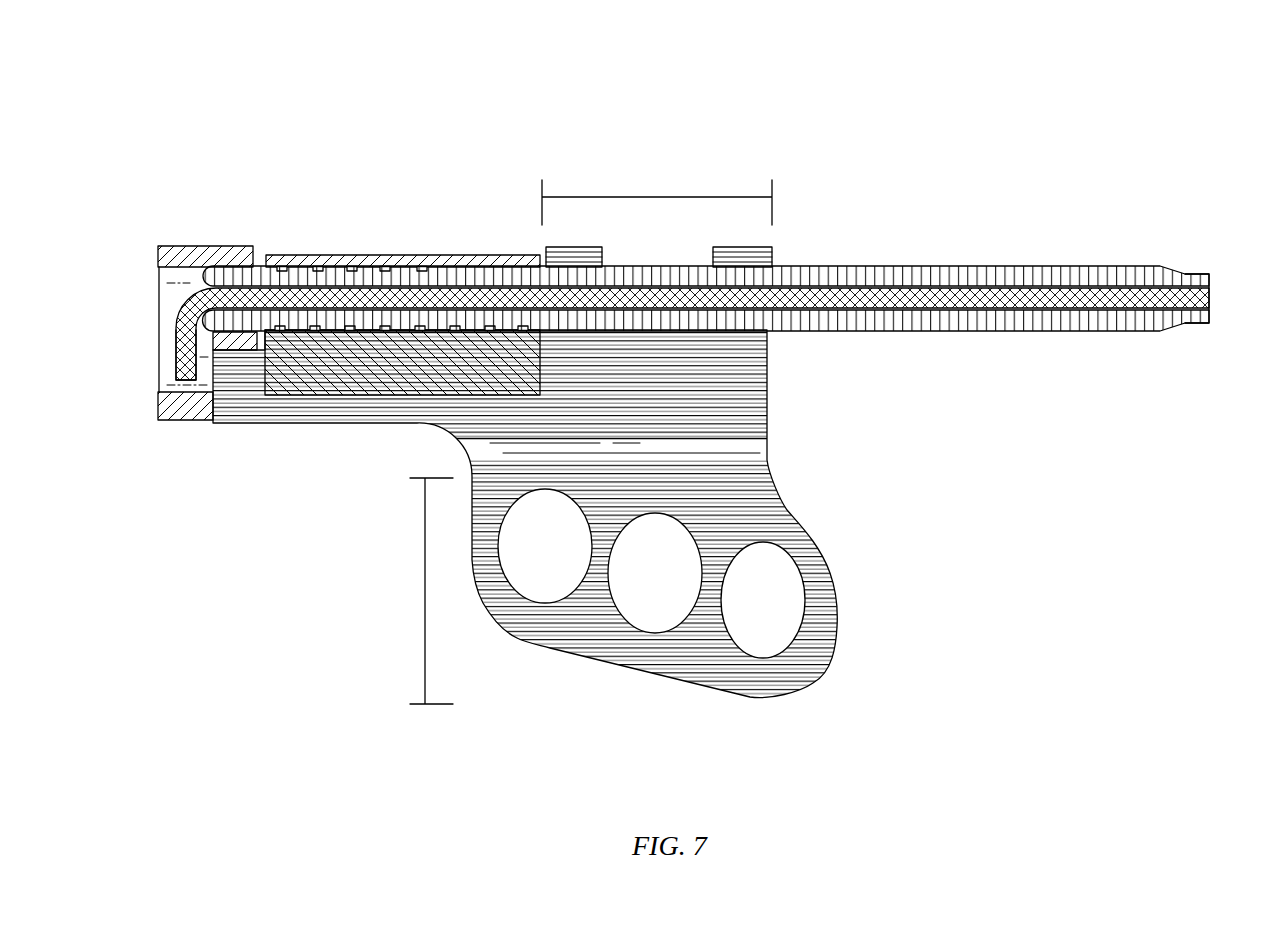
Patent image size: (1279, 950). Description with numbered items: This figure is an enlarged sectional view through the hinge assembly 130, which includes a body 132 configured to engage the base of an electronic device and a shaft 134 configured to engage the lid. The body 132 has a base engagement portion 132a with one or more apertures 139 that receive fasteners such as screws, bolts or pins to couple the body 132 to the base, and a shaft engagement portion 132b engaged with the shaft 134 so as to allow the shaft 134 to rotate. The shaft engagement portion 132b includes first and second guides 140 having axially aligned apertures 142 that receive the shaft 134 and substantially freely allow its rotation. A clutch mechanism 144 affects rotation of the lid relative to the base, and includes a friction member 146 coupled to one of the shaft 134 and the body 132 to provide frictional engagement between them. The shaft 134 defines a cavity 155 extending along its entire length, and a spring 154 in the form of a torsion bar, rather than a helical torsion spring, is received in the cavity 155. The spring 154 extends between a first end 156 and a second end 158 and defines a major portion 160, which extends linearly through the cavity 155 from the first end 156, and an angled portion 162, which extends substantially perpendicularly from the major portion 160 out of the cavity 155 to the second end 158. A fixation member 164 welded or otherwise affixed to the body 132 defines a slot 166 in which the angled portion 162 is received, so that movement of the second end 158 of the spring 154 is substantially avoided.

The hinge assembly 130 is at (207, 93).
The body 132 is at (768, 453).
The base engagement portion 132a is at (425, 598).
The shaft engagement portion 132b is at (678, 197).
The shaft 134 is at (1100, 238).
The apertures 139 is at (737, 650).
The guides 140 is at (715, 243).
The axially aligned apertures 142 is at (732, 267).
The clutch mechanism 144 is at (308, 182).
The friction member 146 is at (353, 257).
The spring 154 is at (1015, 287).
The cavity 155 is at (903, 285).
The first end 156 is at (1209, 298).
The second end 158 is at (187, 382).
The major portion 160 is at (348, 297).
The angled portion 162 is at (177, 347).
The fixation member 164 is at (212, 247).
The slot 166 is at (158, 290).